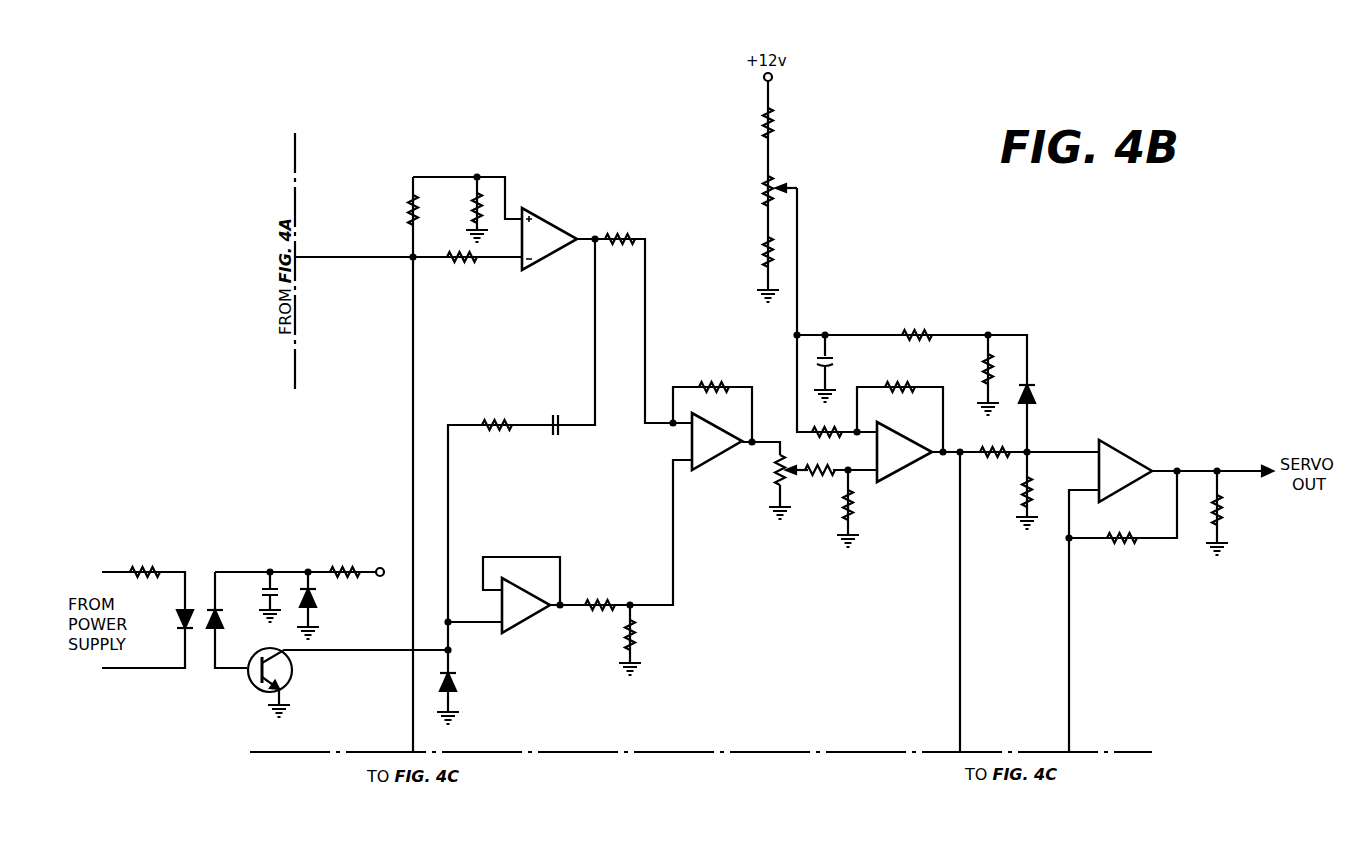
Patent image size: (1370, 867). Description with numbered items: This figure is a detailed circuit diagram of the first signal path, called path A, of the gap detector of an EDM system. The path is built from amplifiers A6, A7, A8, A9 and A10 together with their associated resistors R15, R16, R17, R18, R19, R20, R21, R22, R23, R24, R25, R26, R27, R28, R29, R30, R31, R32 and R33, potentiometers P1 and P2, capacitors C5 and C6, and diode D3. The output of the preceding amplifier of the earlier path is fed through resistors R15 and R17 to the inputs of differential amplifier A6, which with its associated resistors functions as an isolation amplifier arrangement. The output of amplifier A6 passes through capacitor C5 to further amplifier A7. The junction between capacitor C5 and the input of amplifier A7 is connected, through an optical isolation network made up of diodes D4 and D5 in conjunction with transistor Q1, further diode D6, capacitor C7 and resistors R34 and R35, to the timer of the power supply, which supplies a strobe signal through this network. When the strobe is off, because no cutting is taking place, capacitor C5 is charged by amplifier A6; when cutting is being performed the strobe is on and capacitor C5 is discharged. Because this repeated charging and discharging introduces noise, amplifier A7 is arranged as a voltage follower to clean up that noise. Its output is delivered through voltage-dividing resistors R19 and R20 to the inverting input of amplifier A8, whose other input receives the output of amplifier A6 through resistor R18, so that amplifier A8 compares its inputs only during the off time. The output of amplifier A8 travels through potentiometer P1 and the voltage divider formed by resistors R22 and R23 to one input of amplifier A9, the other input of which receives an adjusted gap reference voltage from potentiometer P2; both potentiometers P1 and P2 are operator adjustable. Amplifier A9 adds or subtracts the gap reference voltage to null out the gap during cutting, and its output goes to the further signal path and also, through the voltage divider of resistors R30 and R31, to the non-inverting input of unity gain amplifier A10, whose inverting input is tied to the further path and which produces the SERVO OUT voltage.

The resistor R15 is at (397, 210).
The resistor R16 is at (464, 209).
The resistor R17 is at (463, 268).
The resistor R18 is at (619, 227).
The voltage-dividing resistor R19 is at (600, 594).
The voltage-dividing resistor R20 is at (645, 640).
The resistor R21 is at (712, 400).
The voltage-divider resistor R22 is at (819, 481).
The voltage-divider resistor R23 is at (862, 508).
The resistor R24 is at (827, 421).
The resistor R25 is at (753, 269).
The resistor R26 is at (750, 123).
The resistor R27 is at (900, 407).
The resistor R28 is at (917, 324).
The resistor R29 is at (975, 375).
The voltage-divider resistor R30 is at (995, 462).
The voltage-divider resistor R31 is at (1042, 490).
The resistor R32 is at (1123, 507).
The resistor R33 is at (1232, 513).
The resistor R34 is at (145, 561).
The resistor R35 is at (345, 561).
The capacitor C5 is at (553, 413).
The capacitor C6 is at (837, 368).
The capacitor C7 is at (259, 597).
The diode D3 is at (1041, 395).
The diode D4 is at (171, 620).
The diode D5 is at (229, 620).
The further diode D6 is at (392, 648).
The differential amplifier A6 is at (549, 239).
The amplifier A7 is at (521, 595).
The amplifier A8 is at (717, 441).
The amplifier A9 is at (904, 452).
The unity gain amplifier A10 is at (1125, 471).
The potentiometer P1 is at (780, 487).
The potentiometer P2 is at (767, 191).
The transistor Q1 is at (348, 682).